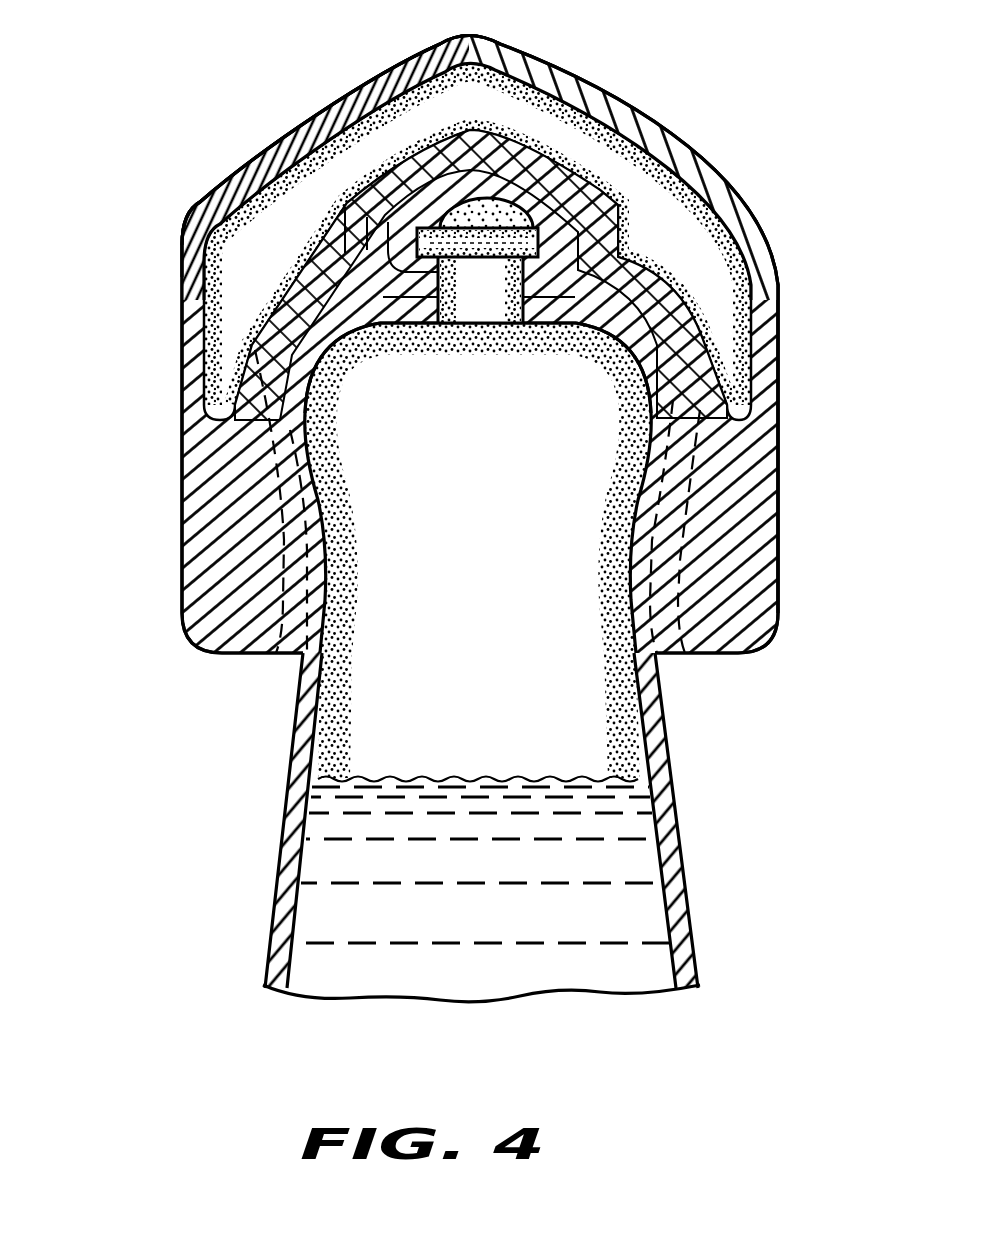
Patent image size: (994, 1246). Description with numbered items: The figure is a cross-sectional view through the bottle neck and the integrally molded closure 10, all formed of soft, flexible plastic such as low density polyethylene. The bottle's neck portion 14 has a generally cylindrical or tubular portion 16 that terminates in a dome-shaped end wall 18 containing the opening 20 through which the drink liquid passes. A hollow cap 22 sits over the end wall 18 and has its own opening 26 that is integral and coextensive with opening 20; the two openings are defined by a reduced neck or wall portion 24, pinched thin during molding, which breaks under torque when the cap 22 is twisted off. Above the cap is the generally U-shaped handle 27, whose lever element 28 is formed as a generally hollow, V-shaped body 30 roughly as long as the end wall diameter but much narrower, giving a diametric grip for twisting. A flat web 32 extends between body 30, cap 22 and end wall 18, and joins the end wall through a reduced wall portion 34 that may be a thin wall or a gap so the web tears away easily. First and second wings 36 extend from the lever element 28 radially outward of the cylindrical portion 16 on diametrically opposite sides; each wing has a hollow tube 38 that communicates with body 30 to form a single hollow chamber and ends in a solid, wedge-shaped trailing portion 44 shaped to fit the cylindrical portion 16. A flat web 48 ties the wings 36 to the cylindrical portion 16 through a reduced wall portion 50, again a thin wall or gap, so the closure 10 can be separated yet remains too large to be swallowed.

The closure 10 is at (703, 131).
The neck portion 14 is at (695, 922).
The generally cylindrical or tubular portion 16 is at (660, 388).
The end wall 18 is at (413, 326).
The opening 20 is at (453, 326).
The cap 22 is at (392, 223).
The reduced neck or wall portion 24 is at (667, 280).
The opening 26 is at (493, 277).
The handle 27 is at (743, 146).
The lever element 28 is at (320, 89).
The body 30 is at (641, 120).
The web 32 is at (513, 180).
The reduced wall portion 34 is at (379, 327).
The wings 36 is at (168, 381).
The hollow tube 38 is at (723, 316).
The trailing portion 44 is at (780, 487).
The web 48 is at (280, 465).
The reduced wall portion 50 is at (313, 530).